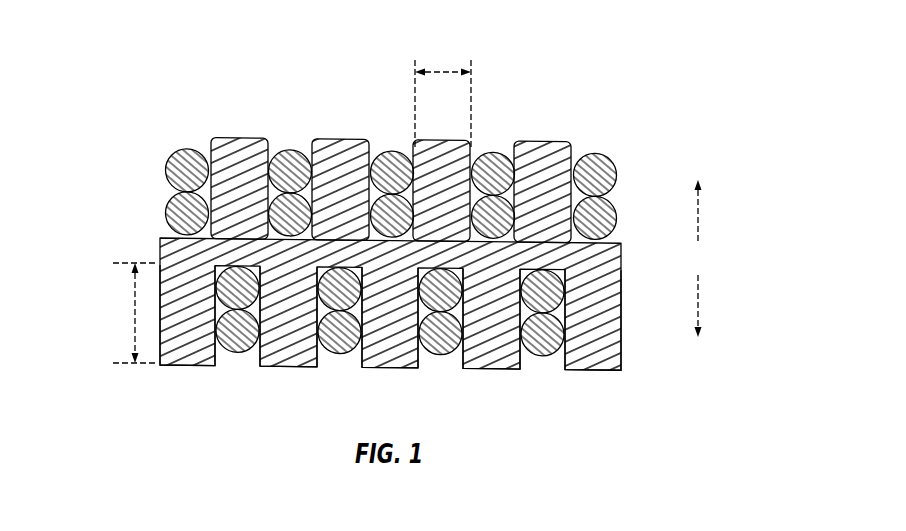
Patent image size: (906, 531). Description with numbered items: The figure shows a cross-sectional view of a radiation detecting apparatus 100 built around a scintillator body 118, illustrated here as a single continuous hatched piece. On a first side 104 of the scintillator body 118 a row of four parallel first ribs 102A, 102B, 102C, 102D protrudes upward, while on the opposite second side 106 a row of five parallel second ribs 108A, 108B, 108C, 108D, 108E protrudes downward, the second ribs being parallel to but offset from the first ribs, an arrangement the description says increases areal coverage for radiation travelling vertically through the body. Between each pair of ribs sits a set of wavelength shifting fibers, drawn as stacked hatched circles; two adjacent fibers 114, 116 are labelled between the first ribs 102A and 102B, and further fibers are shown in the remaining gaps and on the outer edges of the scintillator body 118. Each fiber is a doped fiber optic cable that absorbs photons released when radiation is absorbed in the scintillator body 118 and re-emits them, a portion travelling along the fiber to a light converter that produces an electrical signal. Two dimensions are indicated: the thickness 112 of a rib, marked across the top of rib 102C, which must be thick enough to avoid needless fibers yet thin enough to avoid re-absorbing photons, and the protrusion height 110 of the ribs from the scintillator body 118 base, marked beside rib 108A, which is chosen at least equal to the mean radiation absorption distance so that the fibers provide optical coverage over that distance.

The apparatus 100 is at (695, 80).
The first rib 102A is at (240, 137).
The first rib 102B is at (343, 137).
The first rib 102C is at (452, 140).
The first rib 102D is at (545, 141).
The first side 104 is at (700, 219).
The second portion 106 is at (700, 302).
The second rib 108A is at (183, 363).
The second rib 108B is at (287, 365).
The second rib 108C is at (390, 367).
The second rib 108D is at (488, 368).
The second rib 108E is at (593, 373).
The protrusion height 110 is at (132, 313).
The thickness 112 is at (445, 67).
The wavelength shifting fiber 114 is at (288, 147).
The wavelength shifting fiber 116 is at (275, 218).
The scintillator body 118 is at (582, 260).